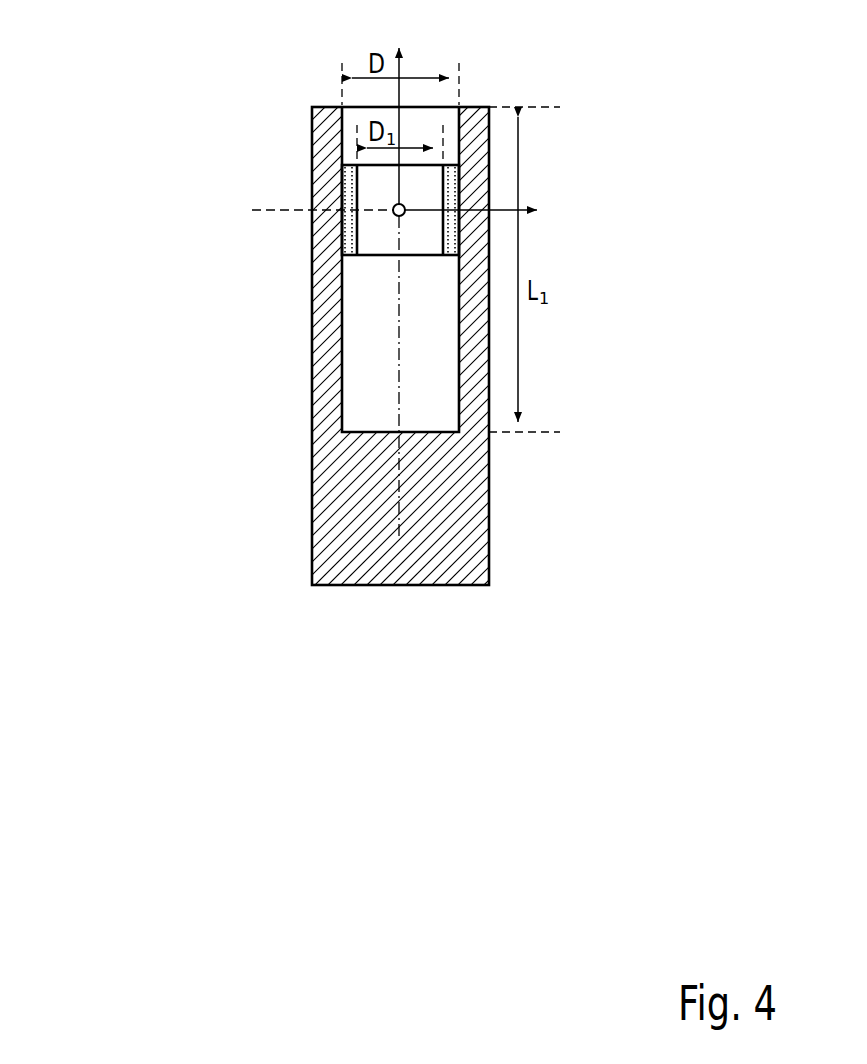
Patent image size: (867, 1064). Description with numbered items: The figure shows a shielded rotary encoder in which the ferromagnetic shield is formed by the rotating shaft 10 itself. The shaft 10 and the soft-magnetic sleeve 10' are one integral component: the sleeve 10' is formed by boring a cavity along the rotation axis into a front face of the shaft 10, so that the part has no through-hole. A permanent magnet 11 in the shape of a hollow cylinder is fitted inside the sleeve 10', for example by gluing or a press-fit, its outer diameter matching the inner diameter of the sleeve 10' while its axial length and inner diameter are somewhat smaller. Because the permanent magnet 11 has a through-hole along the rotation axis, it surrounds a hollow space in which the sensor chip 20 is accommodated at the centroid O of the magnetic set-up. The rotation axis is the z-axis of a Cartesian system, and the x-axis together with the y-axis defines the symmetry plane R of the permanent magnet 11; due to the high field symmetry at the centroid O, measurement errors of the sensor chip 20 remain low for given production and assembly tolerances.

The shaft 10 is at (433, 346).
The sleeve 10' is at (252, 287).
The permanent magnet 11 is at (342, 257).
The sensor chip 20 is at (393, 210).
The centroid O is at (405, 207).
The symmetry plane R is at (297, 211).